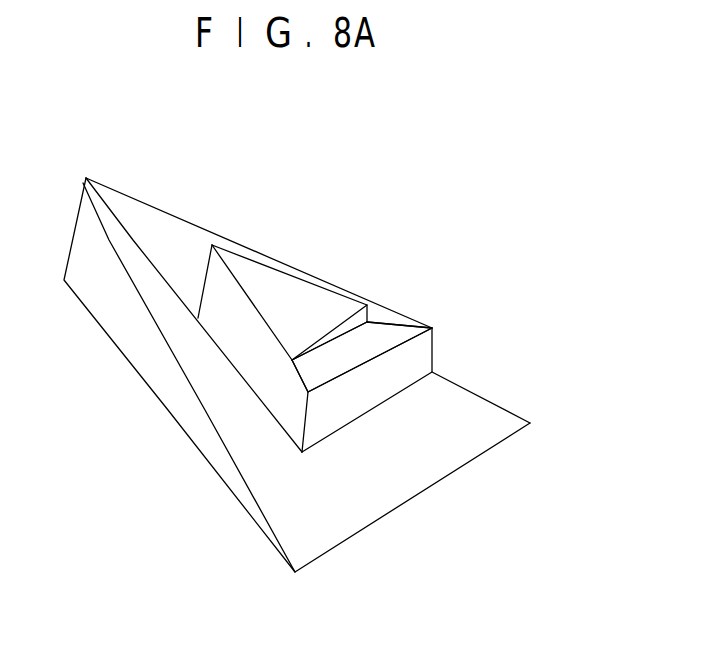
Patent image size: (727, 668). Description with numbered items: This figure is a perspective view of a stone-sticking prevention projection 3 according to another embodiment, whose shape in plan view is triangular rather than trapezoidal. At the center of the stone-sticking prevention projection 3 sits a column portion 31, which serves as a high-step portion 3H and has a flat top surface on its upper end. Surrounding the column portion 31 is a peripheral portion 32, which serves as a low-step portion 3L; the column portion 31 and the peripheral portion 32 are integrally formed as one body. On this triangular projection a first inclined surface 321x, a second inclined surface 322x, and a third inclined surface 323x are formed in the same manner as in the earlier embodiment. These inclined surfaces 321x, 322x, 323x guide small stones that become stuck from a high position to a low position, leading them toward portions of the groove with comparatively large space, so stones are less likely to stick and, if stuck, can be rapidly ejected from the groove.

The stone-sticking prevention projection 3 is at (332, 295).
The column portion 31 is at (289, 267).
The high-step portion 3H is at (281, 293).
The peripheral portion 32 is at (365, 267).
The low-step portion 3L is at (329, 341).
The first inclined surface 321x is at (371, 346).
The second inclined surface 322x is at (157, 224).
The third inclined surface 323x is at (250, 431).